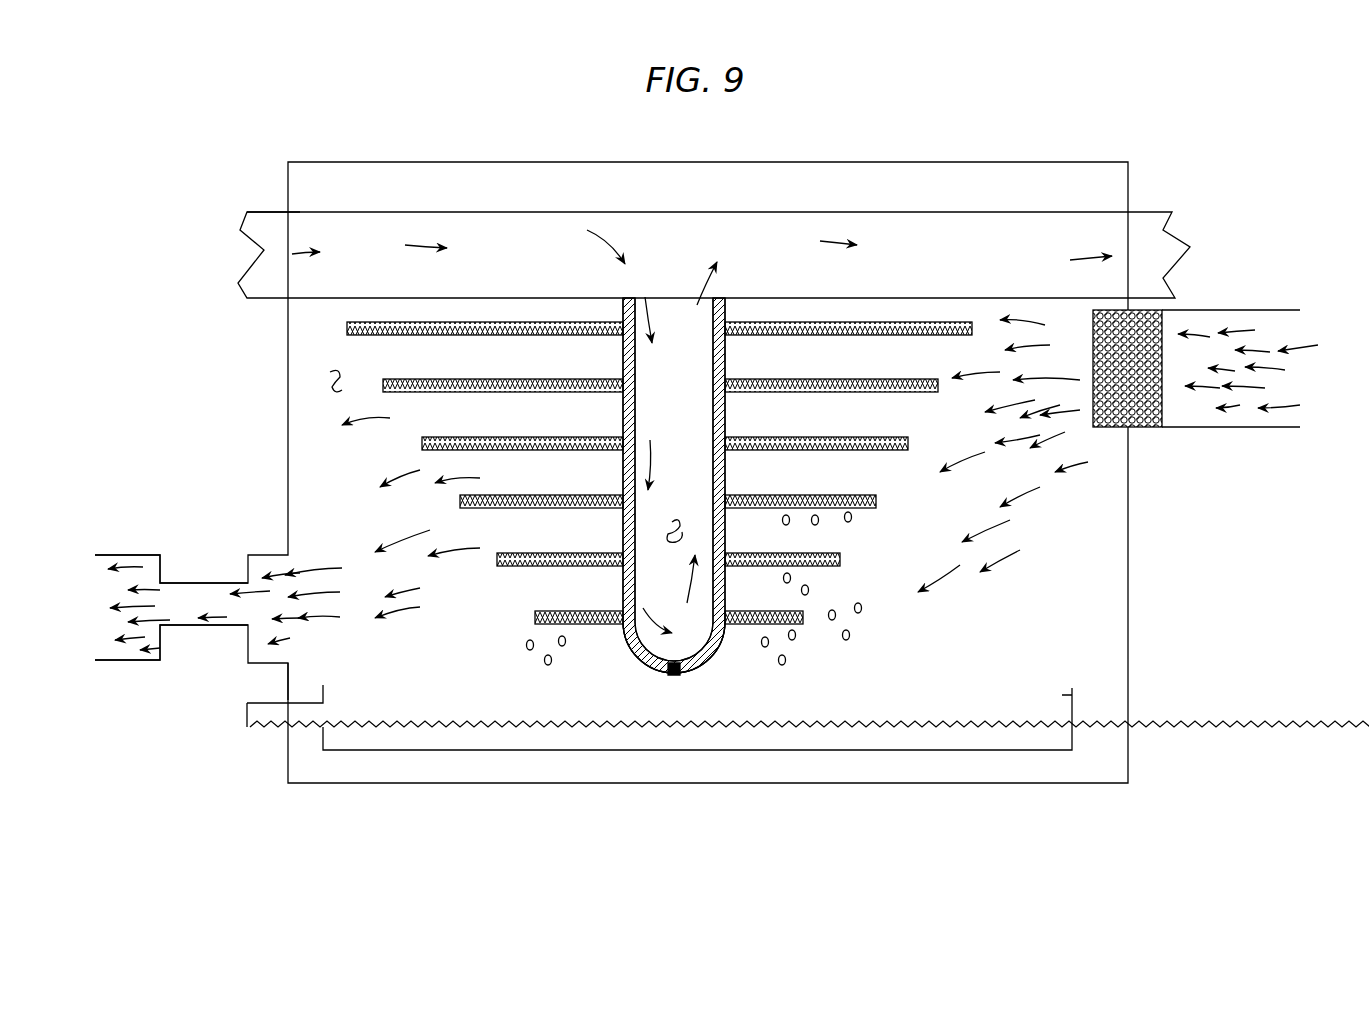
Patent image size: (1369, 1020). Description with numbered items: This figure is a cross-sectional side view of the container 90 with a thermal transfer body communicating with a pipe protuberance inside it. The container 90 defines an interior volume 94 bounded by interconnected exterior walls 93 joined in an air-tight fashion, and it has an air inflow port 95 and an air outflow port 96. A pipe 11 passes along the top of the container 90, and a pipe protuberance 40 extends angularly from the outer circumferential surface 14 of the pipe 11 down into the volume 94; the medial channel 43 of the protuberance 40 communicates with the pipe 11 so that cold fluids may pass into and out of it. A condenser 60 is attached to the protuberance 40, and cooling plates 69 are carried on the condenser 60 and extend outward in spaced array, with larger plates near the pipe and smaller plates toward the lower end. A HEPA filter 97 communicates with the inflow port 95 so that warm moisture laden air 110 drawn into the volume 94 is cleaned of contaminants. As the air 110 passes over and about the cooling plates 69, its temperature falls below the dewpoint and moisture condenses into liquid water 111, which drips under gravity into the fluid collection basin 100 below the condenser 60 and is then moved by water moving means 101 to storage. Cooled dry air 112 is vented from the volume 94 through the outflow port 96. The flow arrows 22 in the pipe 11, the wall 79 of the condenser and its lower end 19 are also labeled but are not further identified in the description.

The container 90 is at (412, 160).
The pipe 11 is at (238, 210).
The outer circumferential surface 14 is at (648, 212).
The conditioned air flow 22 is at (470, 278).
The air inflow port 95 is at (1222, 313).
The HEPA filter 97 is at (1140, 430).
The warm moisture laden air 110 is at (1215, 430).
The interior volume 94 is at (330, 372).
The exterior walls 93 is at (288, 447).
The cooling plates 69 is at (475, 336).
The heat exchanger tube wall 79 is at (628, 378).
The condenser 60 is at (624, 421).
The pipe protuberance 40 is at (624, 537).
The medial channel 43 is at (672, 522).
The tube bottom 19 is at (672, 673).
The cooled dry air 112 is at (203, 583).
The air outflow port 96 is at (290, 656).
The water moving means 101 is at (250, 705).
The fluid collection basin 100 is at (1062, 695).
The liquid water 111 is at (855, 632).